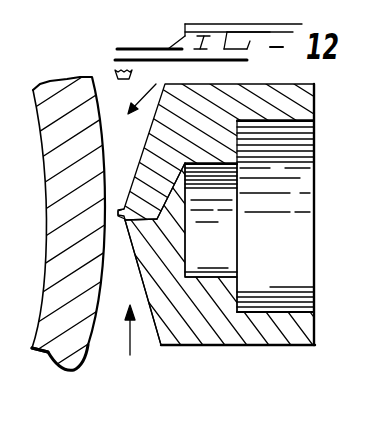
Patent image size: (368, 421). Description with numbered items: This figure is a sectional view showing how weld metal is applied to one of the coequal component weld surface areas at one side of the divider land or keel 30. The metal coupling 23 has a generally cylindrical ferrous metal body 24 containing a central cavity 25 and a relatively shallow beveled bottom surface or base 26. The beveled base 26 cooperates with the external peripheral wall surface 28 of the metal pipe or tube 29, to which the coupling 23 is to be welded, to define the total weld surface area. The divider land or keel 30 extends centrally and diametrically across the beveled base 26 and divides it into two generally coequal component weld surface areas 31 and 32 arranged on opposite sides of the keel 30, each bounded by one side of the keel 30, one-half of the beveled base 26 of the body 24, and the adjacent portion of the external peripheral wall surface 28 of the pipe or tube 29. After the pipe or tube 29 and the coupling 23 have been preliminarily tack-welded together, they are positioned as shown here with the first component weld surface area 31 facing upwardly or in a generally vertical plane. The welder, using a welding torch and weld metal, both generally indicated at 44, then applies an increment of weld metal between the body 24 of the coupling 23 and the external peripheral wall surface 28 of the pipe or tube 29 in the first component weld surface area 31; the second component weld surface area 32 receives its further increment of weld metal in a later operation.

The metal coupling 23 is at (274, 350).
The generally cylindrical metal body 24 is at (222, 346).
The central cavity 25 is at (308, 210).
The beveled bottom surface or base 26 is at (163, 330).
The external peripheral wall surface 28 is at (89, 342).
The metal pipe or tube 29 is at (48, 347).
The divider land or keel 30 is at (120, 213).
The first component weld surface area 31 is at (150, 90).
The second component weld surface area 32 is at (129, 340).
The welding torch and weld metal 44 is at (108, 68).